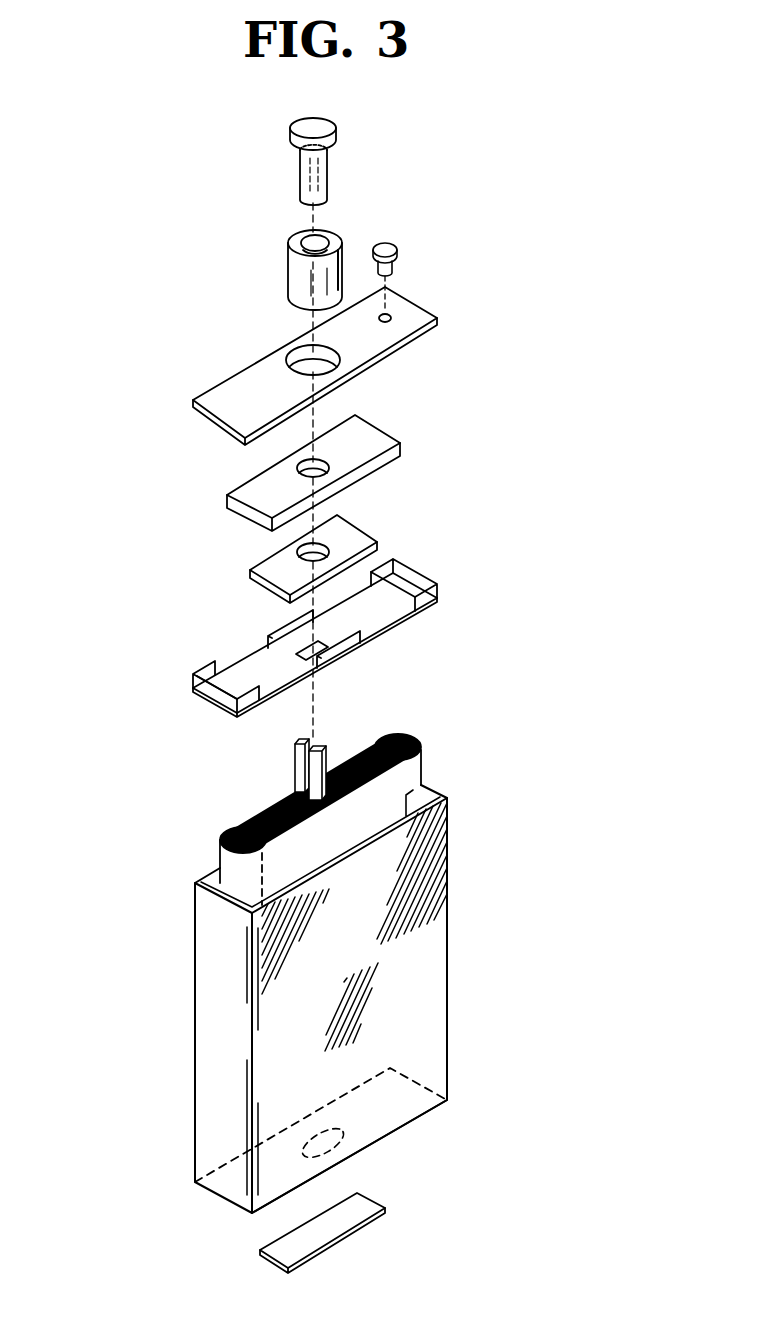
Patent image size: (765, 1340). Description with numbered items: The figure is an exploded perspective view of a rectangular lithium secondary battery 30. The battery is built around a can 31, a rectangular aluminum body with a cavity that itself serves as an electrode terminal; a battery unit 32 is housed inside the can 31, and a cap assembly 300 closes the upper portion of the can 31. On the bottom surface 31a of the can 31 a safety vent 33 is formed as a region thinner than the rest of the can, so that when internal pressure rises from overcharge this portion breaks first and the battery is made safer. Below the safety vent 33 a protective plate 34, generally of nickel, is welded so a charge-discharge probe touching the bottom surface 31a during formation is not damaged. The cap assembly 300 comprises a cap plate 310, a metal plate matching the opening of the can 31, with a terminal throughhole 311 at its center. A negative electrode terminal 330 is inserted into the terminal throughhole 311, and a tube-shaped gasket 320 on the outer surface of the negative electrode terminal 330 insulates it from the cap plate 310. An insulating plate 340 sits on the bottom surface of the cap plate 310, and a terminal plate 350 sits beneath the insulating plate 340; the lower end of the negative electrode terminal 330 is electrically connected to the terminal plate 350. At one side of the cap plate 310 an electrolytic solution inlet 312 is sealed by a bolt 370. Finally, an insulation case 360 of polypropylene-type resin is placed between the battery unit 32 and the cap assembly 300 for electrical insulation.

The lithium secondary battery 30 is at (130, 195).
The cap assembly 300 is at (470, 307).
The cap plate 310 is at (220, 395).
The terminal throughhole 311 is at (308, 363).
The electrolytic solution inlet 312 is at (388, 314).
The gasket 320 is at (292, 268).
The negative electrode terminal 330 is at (303, 172).
The insulating plate 340 is at (376, 441).
The terminal plate 350 is at (355, 535).
The insulation case 360 is at (420, 578).
The bolt 370 is at (388, 248).
The can 31 is at (432, 900).
The bottom surface 31a is at (437, 1110).
The battery unit 32 is at (220, 860).
The safety vent 33 is at (323, 1147).
The protective plate 34 is at (382, 1213).